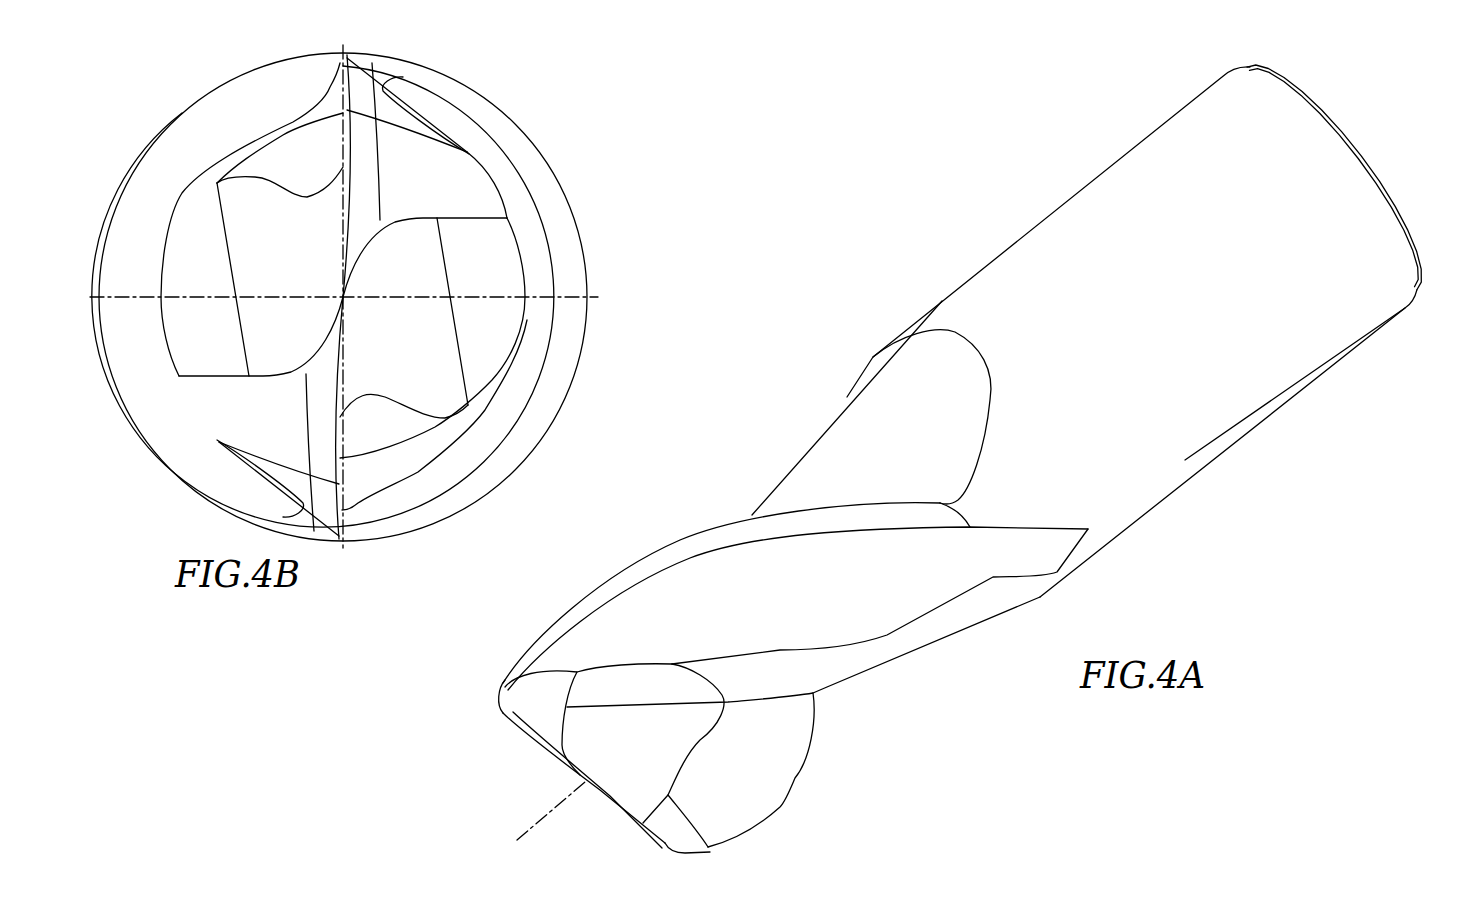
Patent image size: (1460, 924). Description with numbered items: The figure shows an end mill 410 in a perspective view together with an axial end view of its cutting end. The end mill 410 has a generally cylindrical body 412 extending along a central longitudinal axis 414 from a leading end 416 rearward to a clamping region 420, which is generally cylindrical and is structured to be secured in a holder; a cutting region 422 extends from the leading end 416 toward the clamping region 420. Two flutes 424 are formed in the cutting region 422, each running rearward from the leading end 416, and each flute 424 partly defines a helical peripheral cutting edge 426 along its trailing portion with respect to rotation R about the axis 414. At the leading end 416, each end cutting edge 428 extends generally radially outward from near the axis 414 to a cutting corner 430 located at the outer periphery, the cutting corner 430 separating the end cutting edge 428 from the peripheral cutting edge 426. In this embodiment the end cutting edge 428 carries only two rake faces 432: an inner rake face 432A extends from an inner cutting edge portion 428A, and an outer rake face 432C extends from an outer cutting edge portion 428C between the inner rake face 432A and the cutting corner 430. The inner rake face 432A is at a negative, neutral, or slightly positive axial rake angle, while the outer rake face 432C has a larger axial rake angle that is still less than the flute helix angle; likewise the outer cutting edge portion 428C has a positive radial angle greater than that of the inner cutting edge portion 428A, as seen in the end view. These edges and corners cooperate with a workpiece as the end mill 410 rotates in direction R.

In FIG. 4B, the end mill 410 is at (538, 105).
In FIG. 4A, the end mill 410 is at (820, 288).
In FIG. 4A, the body 412 is at (1185, 460).
In FIG. 4B, the central longitudinal axis 414 is at (343, 297).
In FIG. 4A, the central longitudinal axis 414 is at (563, 803).
In FIG. 4A, the leading end 416 is at (505, 827).
In FIG. 4A, the clamping region 420 is at (1015, 202).
In FIG. 4A, the cutting region 422 is at (848, 802).
In FIG. 4B, the flute 424 is at (262, 132).
In FIG. 4A, the flute 424 is at (749, 482).
In FIG. 4A, the peripheral cutting edge 426 is at (653, 548).
In FIG. 4B, the end cutting edge 428 is at (322, 112).
In FIG. 4A, the end cutting edge 428 is at (530, 738).
In FIG. 4B, the inner cutting edge portion 428A is at (328, 374).
In FIG. 4A, the inner cutting edge portion 428A is at (598, 797).
In FIG. 4B, the outer cutting edge portion 428C is at (302, 478).
In FIG. 4A, the outer cutting edge portion 428C is at (657, 847).
In FIG. 4B, the cutting corner 430 is at (345, 60).
In FIG. 4A, the cutting corner 430 is at (495, 690).
In FIG. 4A, the rake face 432 is at (745, 812).
In FIG. 4B, the inner rake face 432A is at (437, 340).
In FIG. 4A, the inner rake face 432A is at (672, 728).
In FIG. 4A, the outer rake face 432C is at (677, 815).
In FIG. 4B, the rotation direction R is at (608, 227).
In FIG. 4A, the rotation direction R is at (1372, 147).